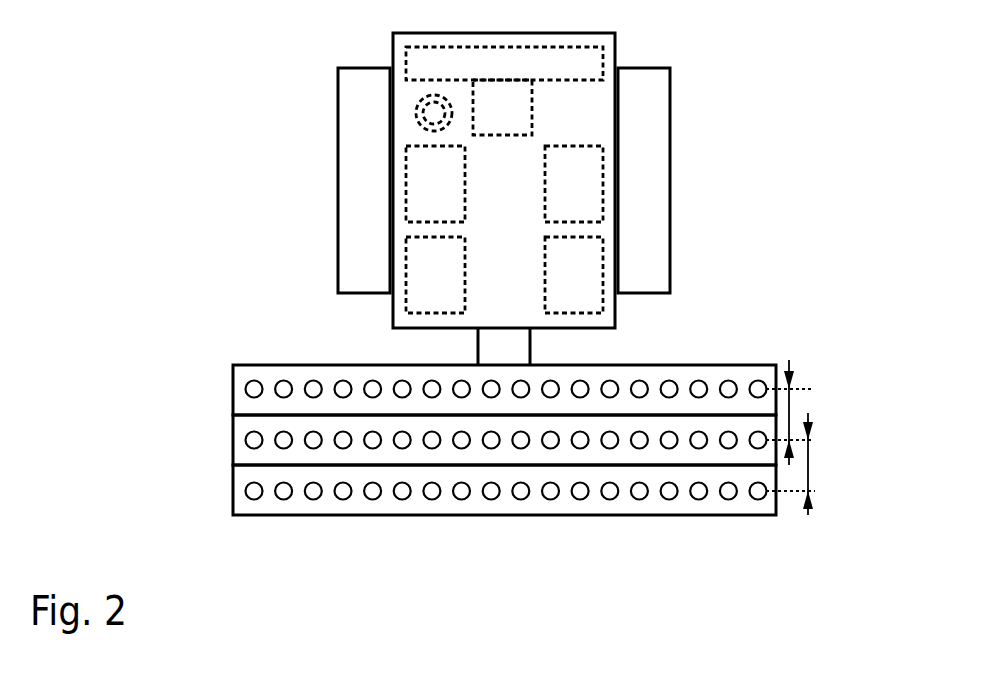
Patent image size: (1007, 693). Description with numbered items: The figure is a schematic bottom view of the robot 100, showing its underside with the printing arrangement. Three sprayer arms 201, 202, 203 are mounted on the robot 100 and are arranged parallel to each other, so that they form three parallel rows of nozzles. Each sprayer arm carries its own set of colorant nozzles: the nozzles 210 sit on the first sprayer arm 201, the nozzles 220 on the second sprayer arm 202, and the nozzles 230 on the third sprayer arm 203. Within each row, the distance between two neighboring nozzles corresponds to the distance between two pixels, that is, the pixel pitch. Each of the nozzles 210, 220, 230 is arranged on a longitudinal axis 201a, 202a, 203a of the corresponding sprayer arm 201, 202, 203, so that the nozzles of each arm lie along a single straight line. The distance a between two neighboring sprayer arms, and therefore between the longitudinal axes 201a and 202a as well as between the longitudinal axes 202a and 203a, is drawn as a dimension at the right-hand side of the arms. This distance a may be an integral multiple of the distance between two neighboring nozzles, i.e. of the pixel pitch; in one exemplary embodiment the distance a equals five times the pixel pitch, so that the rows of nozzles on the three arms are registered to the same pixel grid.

The robot 100 is at (270, 126).
The sprayer arm 201 is at (232, 488).
The sprayer arm 202 is at (232, 437).
The sprayer arm 203 is at (232, 378).
The nozzle 210 is at (455, 499).
The nozzle 220 is at (605, 449).
The nozzle 230 is at (700, 380).
The longitudinal axis 201a is at (815, 491).
The longitudinal axis 202a is at (813, 440).
The longitudinal axis 203a is at (813, 389).
The distance a is at (793, 366).